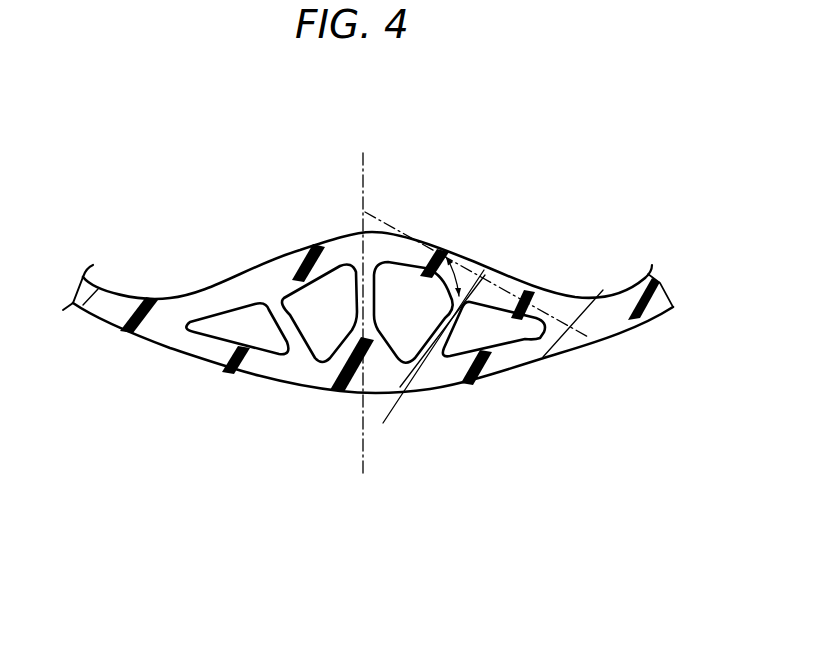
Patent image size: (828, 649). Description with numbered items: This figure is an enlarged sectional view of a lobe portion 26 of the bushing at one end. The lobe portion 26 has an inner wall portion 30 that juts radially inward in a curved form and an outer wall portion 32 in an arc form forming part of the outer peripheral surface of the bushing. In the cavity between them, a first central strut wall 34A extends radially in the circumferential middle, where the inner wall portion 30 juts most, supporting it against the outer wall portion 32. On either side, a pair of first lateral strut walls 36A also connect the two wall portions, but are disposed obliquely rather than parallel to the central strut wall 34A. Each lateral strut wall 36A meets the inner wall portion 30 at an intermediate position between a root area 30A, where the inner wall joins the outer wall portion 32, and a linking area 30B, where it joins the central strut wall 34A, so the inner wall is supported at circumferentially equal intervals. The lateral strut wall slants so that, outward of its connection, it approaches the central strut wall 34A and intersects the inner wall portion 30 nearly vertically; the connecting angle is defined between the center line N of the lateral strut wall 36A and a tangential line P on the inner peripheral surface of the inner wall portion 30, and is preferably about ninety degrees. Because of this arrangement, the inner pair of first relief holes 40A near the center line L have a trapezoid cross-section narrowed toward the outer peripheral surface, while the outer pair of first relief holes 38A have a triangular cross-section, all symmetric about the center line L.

The lobe portion 26 is at (303, 238).
The inner wall portion 30 is at (273, 262).
The root area 30A is at (167, 313).
The linking area 30B is at (362, 262).
The outer wall portion 32 is at (443, 374).
The first central strut wall 34A is at (318, 345).
The first lateral strut wall 36A is at (257, 340).
The first relief hole 38A is at (220, 327).
The first relief hole 40A is at (313, 323).
The center line L is at (365, 172).
The center line of the lateral strut wall N is at (385, 424).
The tangential line P is at (604, 350).